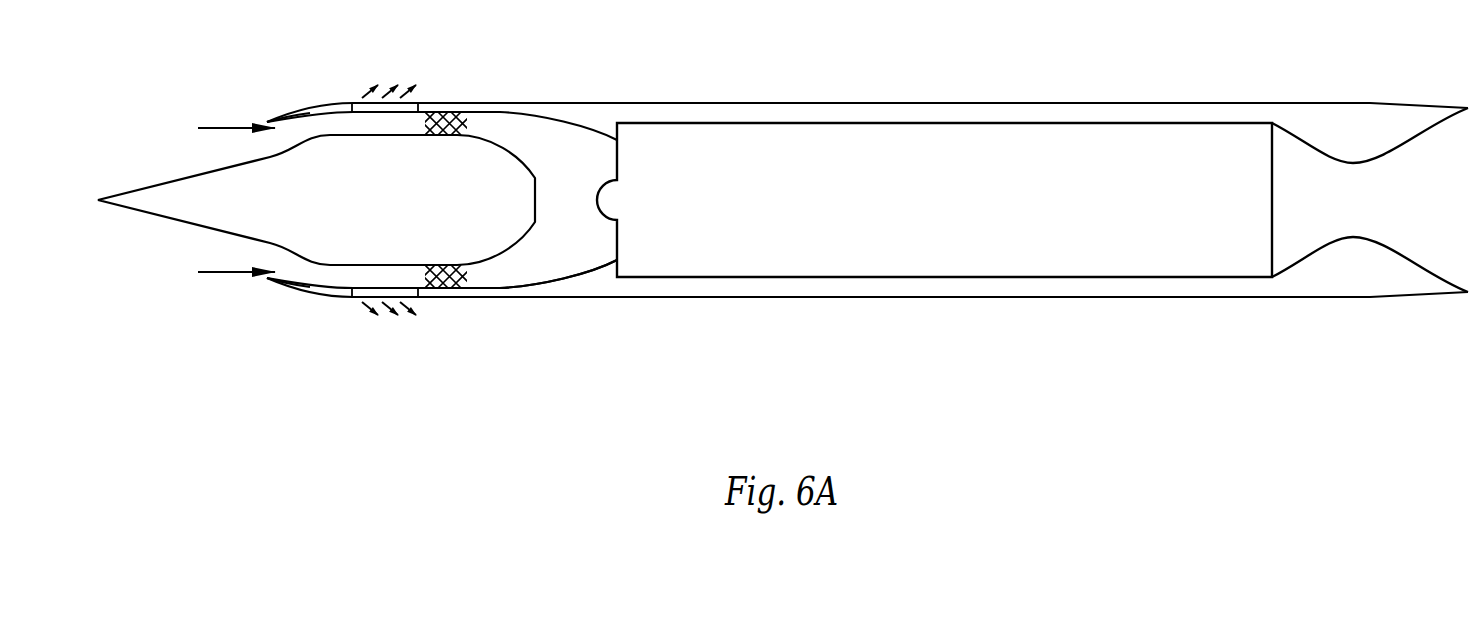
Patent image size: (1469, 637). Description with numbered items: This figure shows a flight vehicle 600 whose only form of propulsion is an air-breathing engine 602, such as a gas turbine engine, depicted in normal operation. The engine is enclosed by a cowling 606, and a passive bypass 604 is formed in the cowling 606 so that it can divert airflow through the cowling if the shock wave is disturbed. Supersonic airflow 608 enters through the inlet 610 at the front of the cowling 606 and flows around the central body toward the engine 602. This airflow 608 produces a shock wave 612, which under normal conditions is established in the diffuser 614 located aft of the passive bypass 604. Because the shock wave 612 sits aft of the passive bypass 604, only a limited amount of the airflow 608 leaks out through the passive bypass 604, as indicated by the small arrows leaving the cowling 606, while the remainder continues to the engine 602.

The flight vehicle 600 is at (307, 463).
The air-breathing engine 602 is at (947, 203).
The passive bypass 604 is at (390, 108).
The cowling 606 is at (303, 59).
The supersonic airflow 608 is at (212, 128).
The inlet 610 is at (308, 272).
The shock wave 612 is at (457, 110).
The diffuser 614 is at (525, 263).